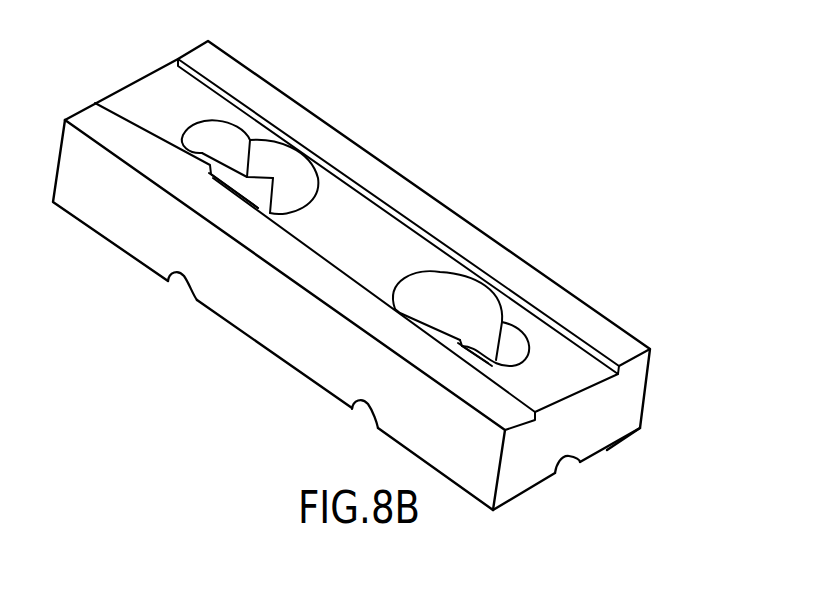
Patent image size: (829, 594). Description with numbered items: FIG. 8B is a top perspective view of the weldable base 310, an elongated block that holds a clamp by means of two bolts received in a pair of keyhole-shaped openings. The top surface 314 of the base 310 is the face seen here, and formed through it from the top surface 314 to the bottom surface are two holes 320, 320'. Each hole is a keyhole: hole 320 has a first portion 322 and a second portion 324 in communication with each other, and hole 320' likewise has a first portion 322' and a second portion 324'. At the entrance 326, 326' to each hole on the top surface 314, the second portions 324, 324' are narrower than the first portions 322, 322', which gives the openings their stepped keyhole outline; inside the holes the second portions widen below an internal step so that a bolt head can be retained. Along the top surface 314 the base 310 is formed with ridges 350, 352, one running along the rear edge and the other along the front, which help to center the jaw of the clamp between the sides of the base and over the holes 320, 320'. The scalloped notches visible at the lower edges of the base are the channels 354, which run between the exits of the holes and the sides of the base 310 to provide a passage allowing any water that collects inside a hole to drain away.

The weldable base 310 is at (120, 60).
The top surface 314 is at (105, 128).
The hole 320 is at (308, 153).
The first portion 322 is at (277, 210).
The second portion 324 is at (219, 84).
The entrance 326 is at (250, 107).
The hole 320' is at (461, 261).
The first portion 322' is at (410, 294).
The second portion 324' is at (514, 359).
The entrance 326' is at (475, 270).
The ridge 350 is at (628, 342).
The ridge 352 is at (497, 402).
The channel 354 is at (181, 287).